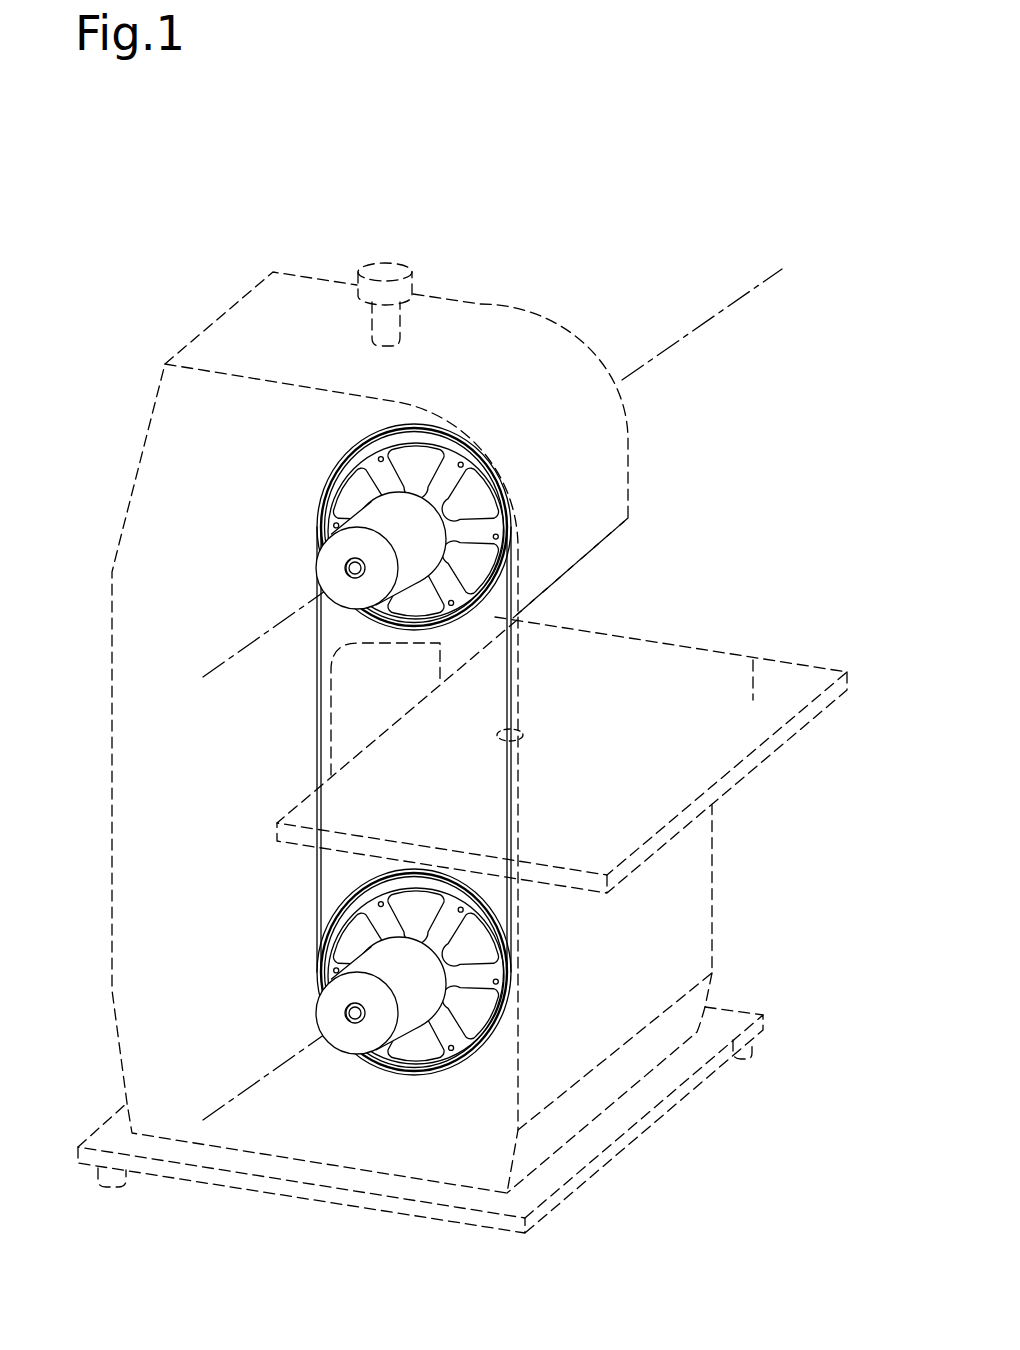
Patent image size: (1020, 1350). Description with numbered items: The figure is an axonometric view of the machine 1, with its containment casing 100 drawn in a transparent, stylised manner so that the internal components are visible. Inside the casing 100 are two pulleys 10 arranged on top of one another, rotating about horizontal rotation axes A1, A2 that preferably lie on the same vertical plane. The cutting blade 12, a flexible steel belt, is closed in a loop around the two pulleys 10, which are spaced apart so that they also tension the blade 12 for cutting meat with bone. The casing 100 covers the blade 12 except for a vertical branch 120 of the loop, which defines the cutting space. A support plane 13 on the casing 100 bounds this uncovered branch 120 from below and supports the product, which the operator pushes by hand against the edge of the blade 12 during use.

The machine 1 is at (521, 222).
The containment casing 100 is at (255, 287).
The pulleys 10 is at (487, 470).
The cutting blade 12 is at (285, 735).
The vertical branch 120 is at (539, 650).
The support plane 13 is at (753, 655).
The rotation axis A1 is at (233, 655).
The rotation axis A2 is at (233, 1098).